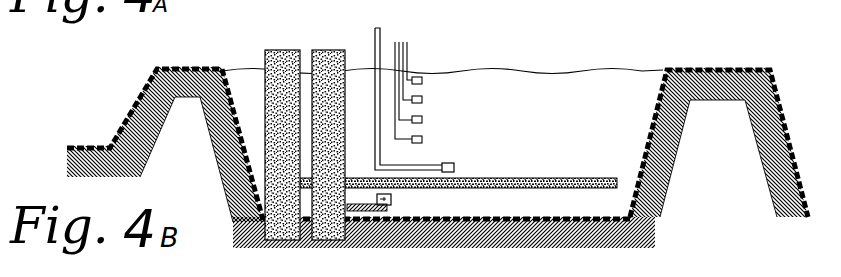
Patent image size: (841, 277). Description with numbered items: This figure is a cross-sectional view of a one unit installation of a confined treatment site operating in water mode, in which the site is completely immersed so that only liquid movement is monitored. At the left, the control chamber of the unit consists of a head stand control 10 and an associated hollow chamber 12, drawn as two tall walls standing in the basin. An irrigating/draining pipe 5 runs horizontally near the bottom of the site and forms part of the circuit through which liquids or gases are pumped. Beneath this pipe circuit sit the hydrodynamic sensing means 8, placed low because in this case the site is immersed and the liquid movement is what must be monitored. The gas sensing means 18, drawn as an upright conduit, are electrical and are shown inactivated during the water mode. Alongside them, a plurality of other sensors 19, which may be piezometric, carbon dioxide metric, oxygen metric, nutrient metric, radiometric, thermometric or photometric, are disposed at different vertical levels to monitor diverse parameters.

The irrigating/draining pipe 5 is at (521, 178).
The hydrodynamic sensing means 8 is at (391, 199).
The head stand control 10 is at (327, 56).
The hollow chamber 12 is at (280, 60).
The gas sensing means 18 is at (381, 33).
The sensors 19 is at (422, 97).